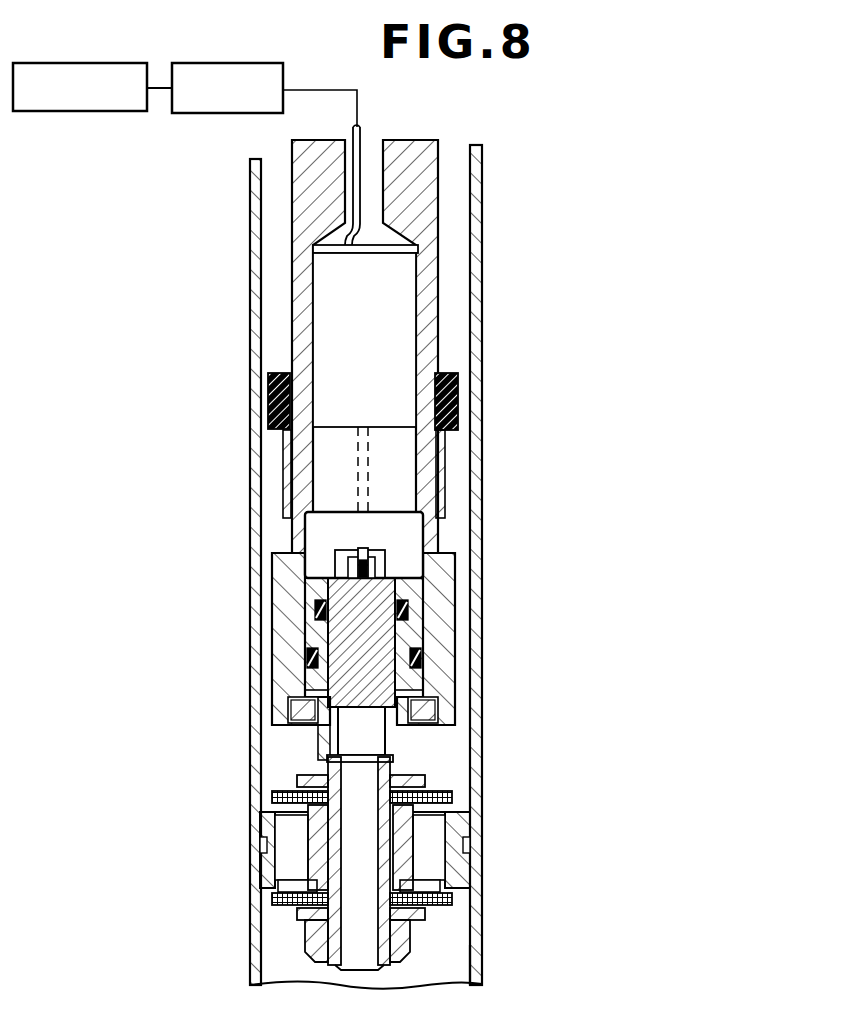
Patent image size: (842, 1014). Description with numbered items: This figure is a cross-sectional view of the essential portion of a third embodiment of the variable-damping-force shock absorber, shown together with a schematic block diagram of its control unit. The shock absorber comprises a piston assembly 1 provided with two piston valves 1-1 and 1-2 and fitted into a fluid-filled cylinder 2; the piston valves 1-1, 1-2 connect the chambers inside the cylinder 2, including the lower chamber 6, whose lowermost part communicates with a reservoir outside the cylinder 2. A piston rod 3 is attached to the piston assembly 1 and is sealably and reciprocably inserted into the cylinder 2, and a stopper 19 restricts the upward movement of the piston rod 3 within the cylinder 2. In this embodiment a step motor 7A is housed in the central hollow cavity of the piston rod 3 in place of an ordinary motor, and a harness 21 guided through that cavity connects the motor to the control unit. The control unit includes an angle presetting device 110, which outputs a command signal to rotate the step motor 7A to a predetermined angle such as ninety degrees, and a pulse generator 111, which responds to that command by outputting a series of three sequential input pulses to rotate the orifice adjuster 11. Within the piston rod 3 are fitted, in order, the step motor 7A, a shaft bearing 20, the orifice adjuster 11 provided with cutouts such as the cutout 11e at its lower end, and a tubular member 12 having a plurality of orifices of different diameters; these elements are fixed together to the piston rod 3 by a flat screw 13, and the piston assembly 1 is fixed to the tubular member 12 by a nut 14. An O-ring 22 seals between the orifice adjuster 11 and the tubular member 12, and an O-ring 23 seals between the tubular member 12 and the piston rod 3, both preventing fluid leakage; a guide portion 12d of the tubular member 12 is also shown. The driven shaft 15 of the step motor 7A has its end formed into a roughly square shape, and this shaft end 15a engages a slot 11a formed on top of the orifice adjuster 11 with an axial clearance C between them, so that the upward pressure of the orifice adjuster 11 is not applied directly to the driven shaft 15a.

The angle presetting device 110 is at (85, 63).
The pulse generator 111 is at (209, 63).
The harness 21 is at (352, 130).
The cylinder 2 is at (471, 172).
The piston rod 3 is at (437, 200).
The step motor 7A is at (405, 310).
The stopper 19 is at (458, 395).
The driven shaft 15 is at (369, 495).
The shaft bearing 20 is at (482, 531).
The slot 11a is at (360, 575).
The driven shaft 15a is at (367, 565).
The clearance C is at (369, 565).
The orifice adjuster 11 is at (379, 593).
The O-ring 22 is at (408, 610).
The tubular member 12 is at (414, 633).
The O-ring 23 is at (421, 658).
The flat screw 13 is at (438, 712).
The housing guide 12d is at (318, 736).
The cutout 11e is at (333, 745).
The piston valve 1-1 is at (440, 790).
The piston assembly 1 is at (456, 866).
The piston valve 1-2 is at (272, 898).
The nut 14 is at (404, 940).
The lower chamber 6 is at (470, 962).